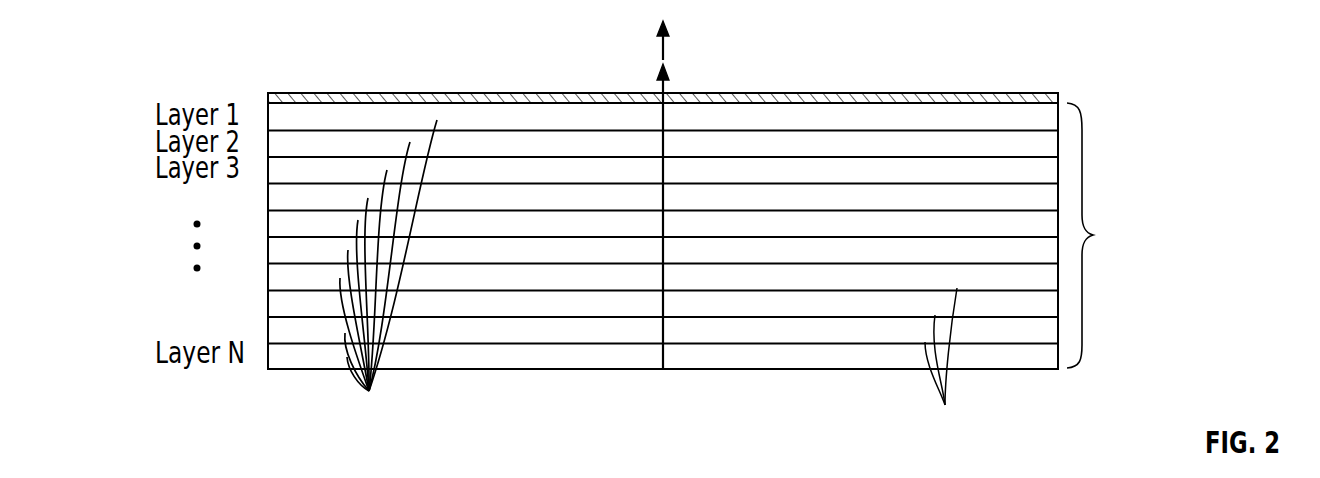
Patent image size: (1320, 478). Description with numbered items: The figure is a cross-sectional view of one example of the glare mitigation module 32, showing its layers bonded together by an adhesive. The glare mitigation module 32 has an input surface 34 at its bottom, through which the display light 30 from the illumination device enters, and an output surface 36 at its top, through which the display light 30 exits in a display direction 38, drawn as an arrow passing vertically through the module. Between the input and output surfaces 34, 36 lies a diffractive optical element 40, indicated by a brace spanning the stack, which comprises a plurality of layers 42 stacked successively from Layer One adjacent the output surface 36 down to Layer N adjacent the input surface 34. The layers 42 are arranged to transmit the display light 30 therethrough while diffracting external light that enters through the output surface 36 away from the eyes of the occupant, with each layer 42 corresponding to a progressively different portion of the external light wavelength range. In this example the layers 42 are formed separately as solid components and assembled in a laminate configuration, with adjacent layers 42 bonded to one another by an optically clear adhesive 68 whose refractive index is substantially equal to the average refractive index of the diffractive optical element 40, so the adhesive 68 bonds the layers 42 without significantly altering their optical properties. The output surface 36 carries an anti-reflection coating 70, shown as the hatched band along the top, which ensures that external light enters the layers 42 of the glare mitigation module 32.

The display light 30 is at (660, 82).
The glare mitigation module 32 is at (1081, 61).
The input surface 34 is at (788, 369).
The output surface 36 is at (773, 93).
The display direction 38 is at (666, 41).
The diffractive optical element 40 is at (698, 235).
The layers 42 is at (388, 274).
The optically clear adhesive 68 is at (941, 364).
The anti-reflection coating 70 is at (920, 97).